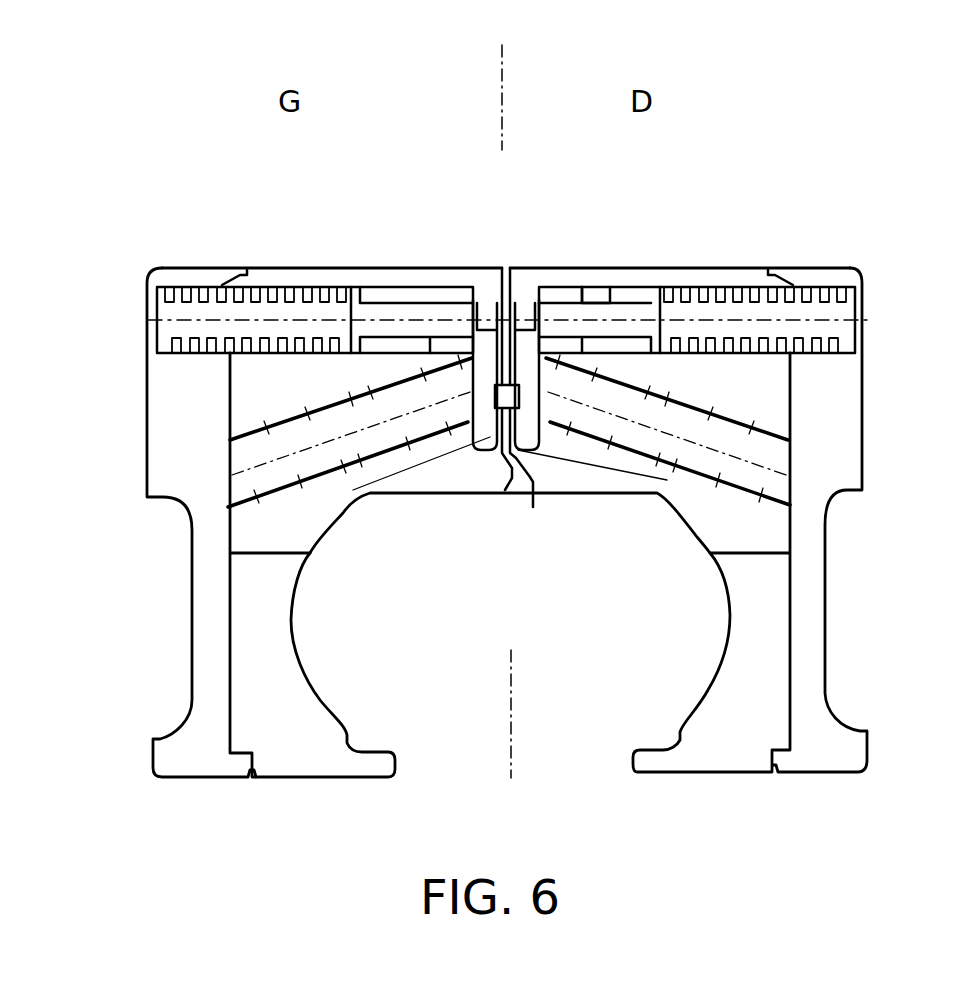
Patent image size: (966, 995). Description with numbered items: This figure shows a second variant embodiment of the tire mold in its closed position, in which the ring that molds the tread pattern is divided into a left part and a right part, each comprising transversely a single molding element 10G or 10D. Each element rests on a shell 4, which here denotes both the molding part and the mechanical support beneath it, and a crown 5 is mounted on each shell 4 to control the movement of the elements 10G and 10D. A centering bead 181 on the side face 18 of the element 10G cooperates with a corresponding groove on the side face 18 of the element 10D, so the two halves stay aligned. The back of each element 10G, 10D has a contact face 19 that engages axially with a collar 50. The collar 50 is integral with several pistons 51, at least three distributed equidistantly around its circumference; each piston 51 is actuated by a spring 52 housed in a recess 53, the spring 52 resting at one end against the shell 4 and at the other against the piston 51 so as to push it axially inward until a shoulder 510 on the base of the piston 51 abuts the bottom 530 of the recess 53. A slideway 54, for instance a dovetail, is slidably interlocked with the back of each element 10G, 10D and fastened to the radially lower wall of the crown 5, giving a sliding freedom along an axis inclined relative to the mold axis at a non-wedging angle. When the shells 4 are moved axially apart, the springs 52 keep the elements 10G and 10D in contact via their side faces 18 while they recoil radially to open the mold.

The shell 4 is at (305, 745).
The crown 5 is at (267, 287).
The collar 50 is at (523, 278).
The piston 51 is at (440, 318).
The spring 52 is at (203, 297).
The recess 53 is at (148, 318).
The slideway 54 is at (242, 473).
The shoulder 510 is at (350, 287).
The bottom of the recess 530 is at (617, 295).
The molding element of part G 10G is at (263, 535).
The molding element of part D 10D is at (753, 528).
The side face 18 is at (503, 487).
The centering bead 181 is at (521, 460).
The contact face 19 is at (353, 492).